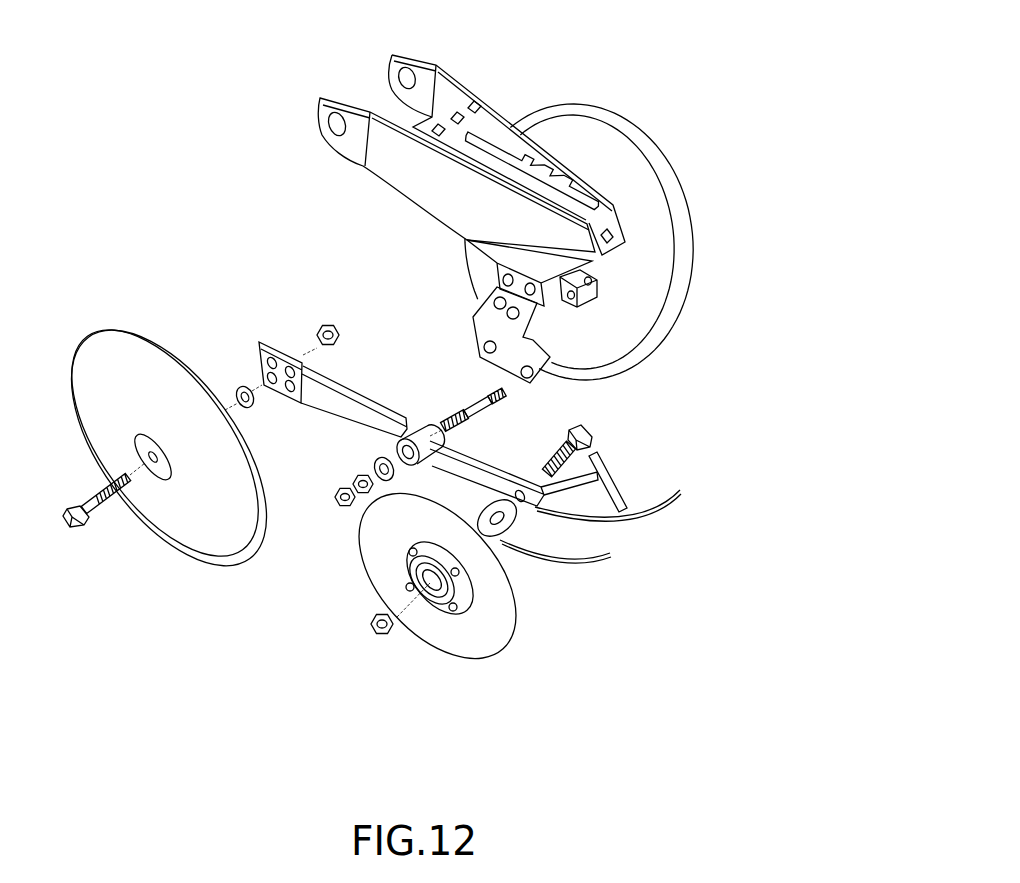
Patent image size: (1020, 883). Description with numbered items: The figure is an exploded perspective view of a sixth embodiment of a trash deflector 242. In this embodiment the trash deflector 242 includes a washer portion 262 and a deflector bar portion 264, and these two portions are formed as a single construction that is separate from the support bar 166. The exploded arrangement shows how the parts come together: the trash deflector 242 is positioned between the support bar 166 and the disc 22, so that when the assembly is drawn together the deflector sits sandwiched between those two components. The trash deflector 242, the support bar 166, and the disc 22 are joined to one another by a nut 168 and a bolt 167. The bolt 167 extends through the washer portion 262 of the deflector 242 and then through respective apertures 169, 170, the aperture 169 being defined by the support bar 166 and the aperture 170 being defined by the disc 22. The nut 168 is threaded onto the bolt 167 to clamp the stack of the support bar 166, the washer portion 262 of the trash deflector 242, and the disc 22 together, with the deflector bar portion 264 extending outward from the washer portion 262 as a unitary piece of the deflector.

The aperture 170 is at (628, 77).
The support bar 166 is at (473, 470).
The bolt 167 is at (592, 436).
The nut 168 is at (387, 637).
The aperture 169 is at (415, 586).
The disc 22 is at (477, 647).
The washer portion 262 is at (500, 540).
The deflector bar portion 264 is at (600, 548).
The trash deflector 242 is at (587, 570).